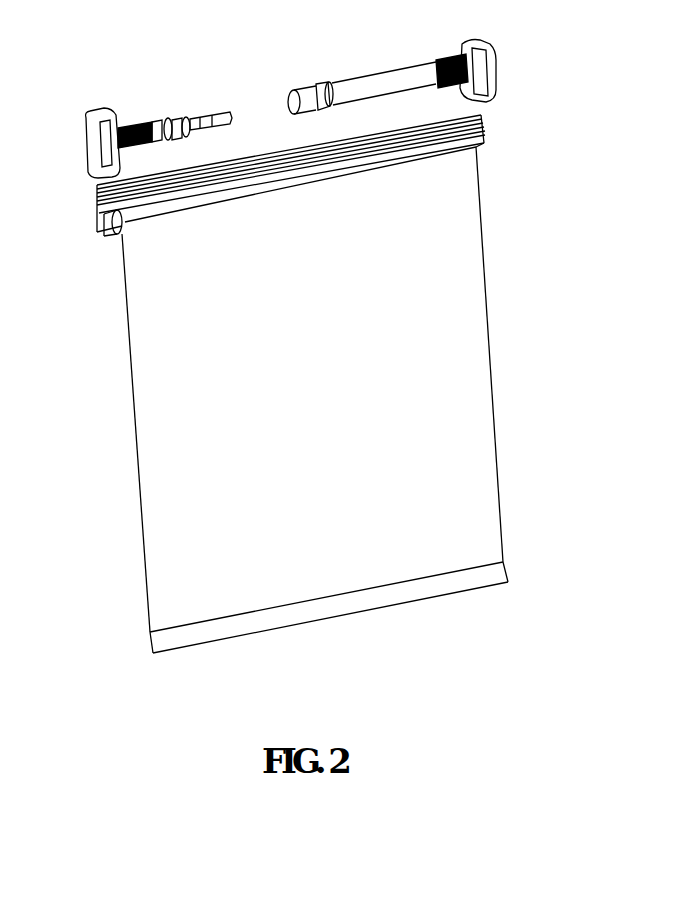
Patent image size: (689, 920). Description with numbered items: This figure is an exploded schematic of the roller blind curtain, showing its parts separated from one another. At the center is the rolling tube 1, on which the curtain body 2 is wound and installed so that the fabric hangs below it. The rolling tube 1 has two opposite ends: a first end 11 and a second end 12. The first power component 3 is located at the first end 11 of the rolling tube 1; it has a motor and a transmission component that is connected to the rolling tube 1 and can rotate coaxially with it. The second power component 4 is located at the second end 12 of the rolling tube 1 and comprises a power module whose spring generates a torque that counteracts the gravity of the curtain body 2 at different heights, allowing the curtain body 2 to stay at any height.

The rolling tube 1 is at (361, 86).
The curtain body 2 is at (476, 326).
The first power component 3 is at (272, 160).
The second power component 4 is at (184, 106).
The first end 11 is at (478, 148).
The second end 12 is at (100, 233).